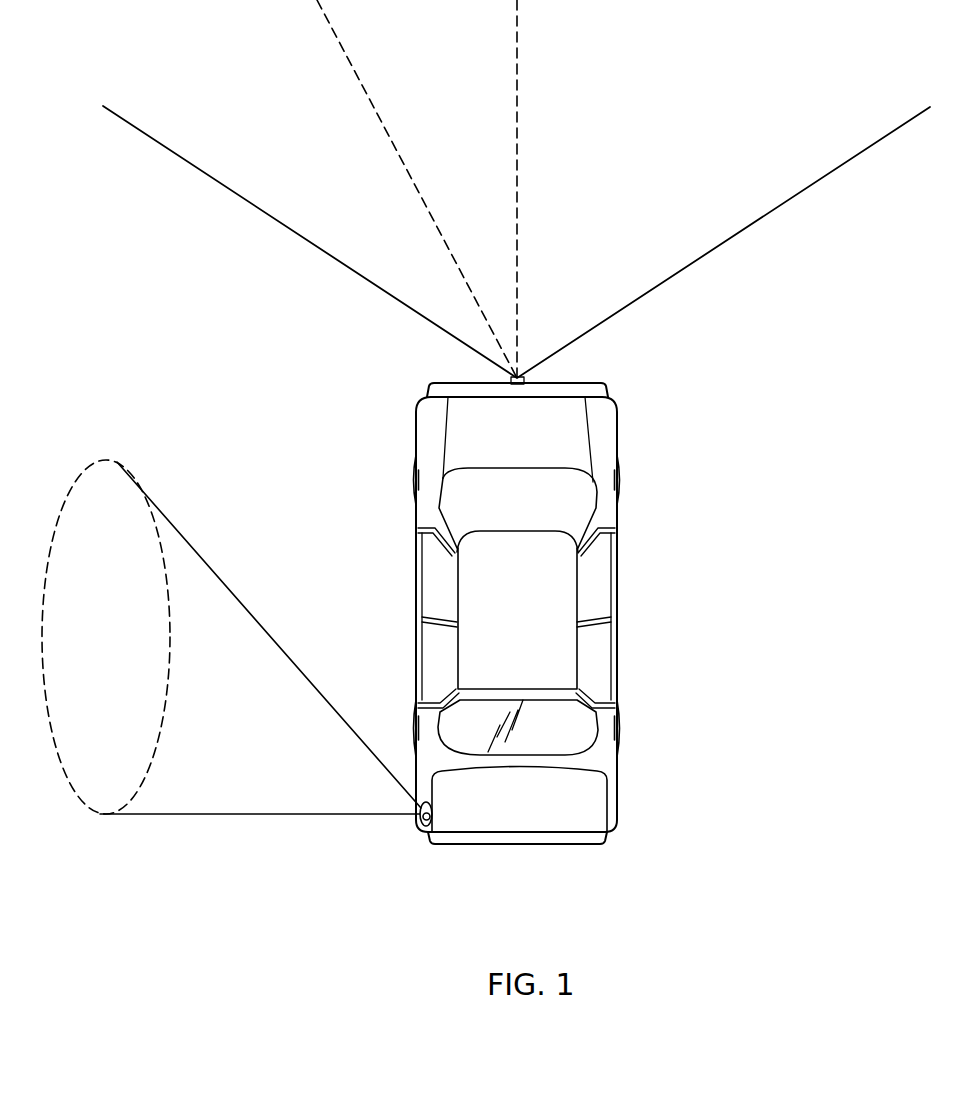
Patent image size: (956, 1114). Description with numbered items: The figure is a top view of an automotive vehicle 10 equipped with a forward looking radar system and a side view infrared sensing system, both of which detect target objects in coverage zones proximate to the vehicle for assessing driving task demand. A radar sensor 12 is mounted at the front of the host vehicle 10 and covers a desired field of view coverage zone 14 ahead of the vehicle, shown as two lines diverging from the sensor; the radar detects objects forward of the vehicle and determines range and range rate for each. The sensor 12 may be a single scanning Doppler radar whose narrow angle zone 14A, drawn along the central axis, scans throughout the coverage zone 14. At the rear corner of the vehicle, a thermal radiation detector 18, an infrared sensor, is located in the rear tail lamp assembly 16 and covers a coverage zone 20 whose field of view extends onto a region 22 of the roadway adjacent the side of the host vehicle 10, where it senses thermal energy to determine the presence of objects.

The automotive vehicle 10 is at (699, 360).
The radar sensor 12 is at (526, 381).
The coverage zone 14 is at (352, 266).
The narrow angle zone 14A is at (519, 192).
The rear tail lamp assembly 16 is at (418, 810).
The thermal radiation detector 18 is at (423, 822).
The coverage zone 20 is at (258, 615).
The region 22 is at (73, 479).